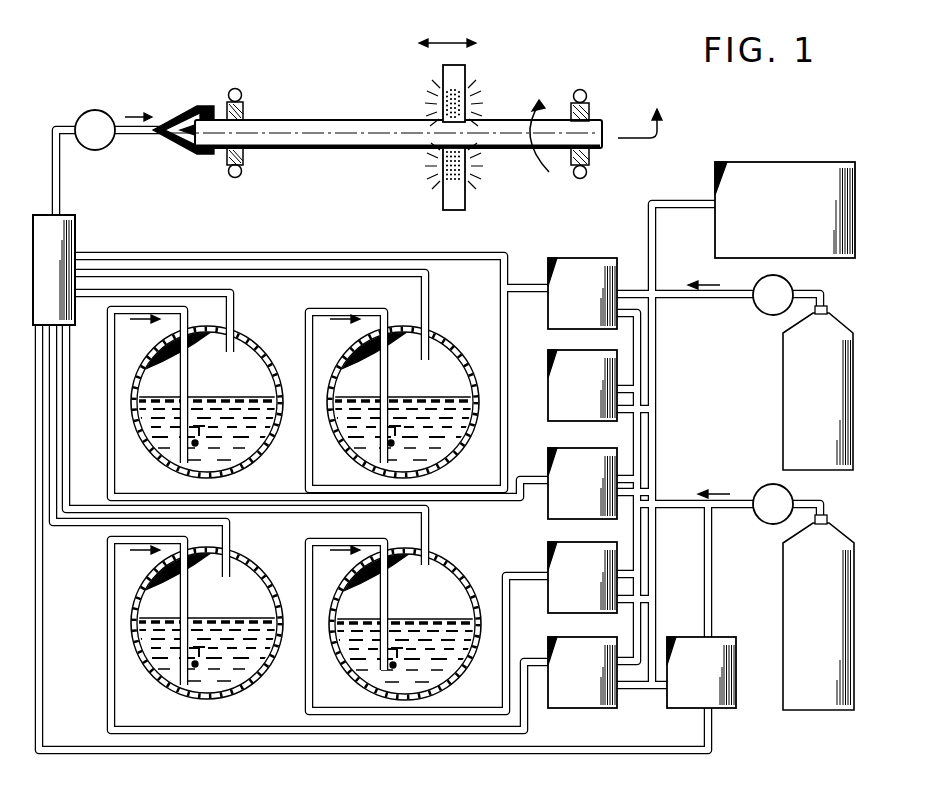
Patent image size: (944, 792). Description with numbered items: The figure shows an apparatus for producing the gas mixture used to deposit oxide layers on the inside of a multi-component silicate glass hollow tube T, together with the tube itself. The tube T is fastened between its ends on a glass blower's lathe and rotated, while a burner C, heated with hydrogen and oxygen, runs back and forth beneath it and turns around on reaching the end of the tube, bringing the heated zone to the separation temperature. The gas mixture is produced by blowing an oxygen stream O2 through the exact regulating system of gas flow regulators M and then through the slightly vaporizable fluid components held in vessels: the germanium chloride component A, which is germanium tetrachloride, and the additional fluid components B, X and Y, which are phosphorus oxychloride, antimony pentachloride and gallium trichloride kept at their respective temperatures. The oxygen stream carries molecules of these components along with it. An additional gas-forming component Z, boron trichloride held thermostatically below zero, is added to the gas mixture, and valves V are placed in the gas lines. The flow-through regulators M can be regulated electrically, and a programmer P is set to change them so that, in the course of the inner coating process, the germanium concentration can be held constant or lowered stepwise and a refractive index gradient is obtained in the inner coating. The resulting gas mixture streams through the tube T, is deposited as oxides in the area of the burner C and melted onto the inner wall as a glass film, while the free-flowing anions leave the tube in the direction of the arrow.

The silicate hollow tube T is at (333, 120).
The burner C is at (462, 80).
The valve V is at (434, 317).
The programmer P is at (790, 178).
The additional gas-forming component Z is at (797, 402).
The oxygen O2 is at (796, 622).
The fluid component X is at (248, 338).
The germanium chloride component A is at (441, 360).
The fluid component Y is at (263, 572).
The fluid component B is at (461, 596).
The gas flow regulator M is at (562, 362).